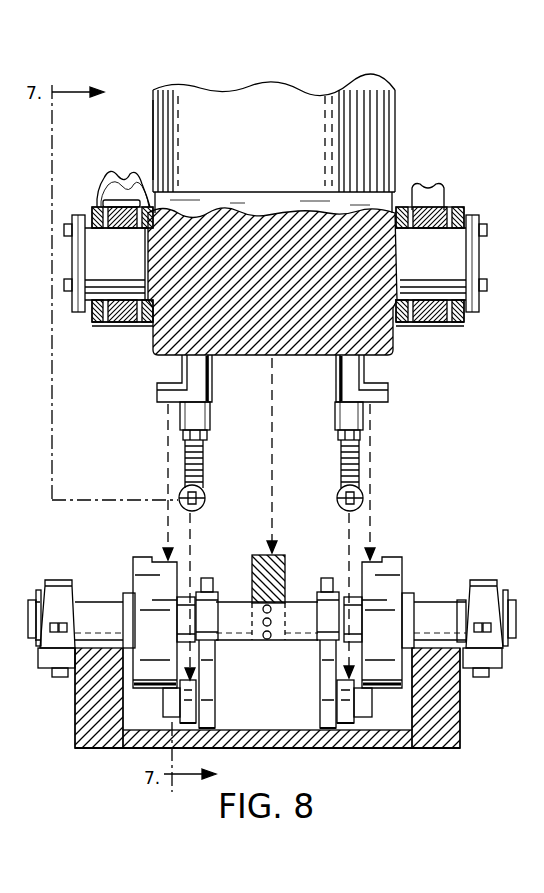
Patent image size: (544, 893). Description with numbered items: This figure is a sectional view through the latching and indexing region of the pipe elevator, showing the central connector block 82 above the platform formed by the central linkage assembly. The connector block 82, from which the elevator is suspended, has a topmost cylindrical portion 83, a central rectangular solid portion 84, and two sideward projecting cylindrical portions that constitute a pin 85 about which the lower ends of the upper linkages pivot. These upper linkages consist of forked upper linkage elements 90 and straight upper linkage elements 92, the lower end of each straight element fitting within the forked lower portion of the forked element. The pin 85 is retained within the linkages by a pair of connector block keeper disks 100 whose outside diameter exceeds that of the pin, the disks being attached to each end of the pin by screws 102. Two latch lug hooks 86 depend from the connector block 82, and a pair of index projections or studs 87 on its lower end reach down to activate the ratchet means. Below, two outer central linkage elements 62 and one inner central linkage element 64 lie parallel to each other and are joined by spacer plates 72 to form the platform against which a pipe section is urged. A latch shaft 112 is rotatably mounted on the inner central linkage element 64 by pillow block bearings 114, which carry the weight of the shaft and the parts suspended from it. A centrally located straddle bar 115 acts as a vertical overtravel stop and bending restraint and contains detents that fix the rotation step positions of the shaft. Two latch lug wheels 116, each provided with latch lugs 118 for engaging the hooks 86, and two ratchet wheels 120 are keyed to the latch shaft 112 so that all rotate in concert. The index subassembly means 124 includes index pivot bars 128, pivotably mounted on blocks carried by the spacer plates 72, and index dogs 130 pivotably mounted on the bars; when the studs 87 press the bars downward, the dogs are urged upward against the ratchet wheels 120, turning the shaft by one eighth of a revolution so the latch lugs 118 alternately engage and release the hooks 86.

The outer central linkage element 62 is at (76, 711).
The inner central linkage element 64 is at (263, 749).
The spacer plate 72 is at (141, 749).
The central connector block 82 is at (342, 192).
The topmost cylindrical portion 83 is at (154, 125).
The central rectangular solid portion 84 is at (398, 344).
The pin 85 is at (444, 256).
The latch lug hook 86 is at (185, 382).
The index projection 87 is at (206, 496).
The forked upper linkage element 90 is at (148, 201).
The straight upper linkage element 92 is at (432, 193).
The connector block keeper disk 100 is at (76, 250).
The screw 102 is at (67, 284).
The latch shaft 112 is at (105, 603).
The pillow block bearing 114 is at (53, 580).
The straddle bar 115 is at (280, 554).
The latch lug wheel 116 is at (142, 557).
The latch lug 118 is at (165, 572).
The ratchet wheel 120 is at (206, 582).
The index subassembly means 124 is at (178, 714).
The index pivot bar 128 is at (183, 726).
The index dog 130 is at (206, 730).